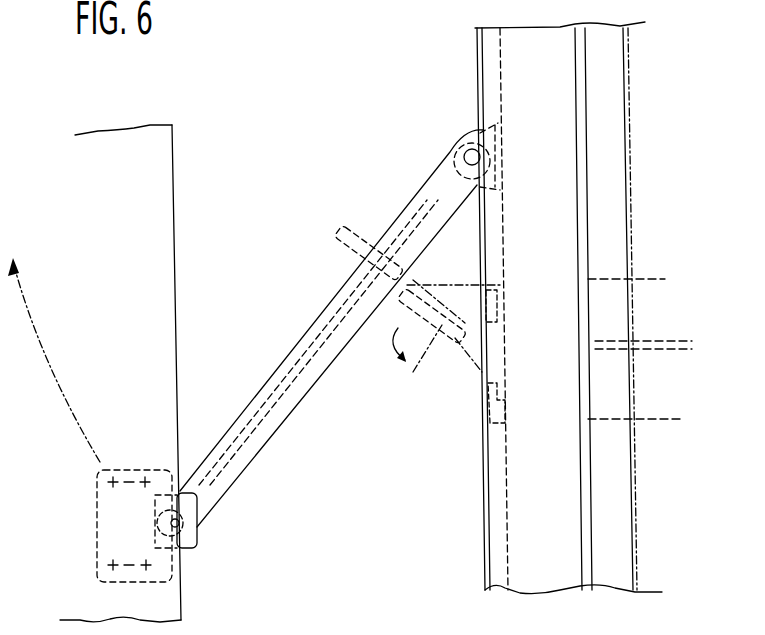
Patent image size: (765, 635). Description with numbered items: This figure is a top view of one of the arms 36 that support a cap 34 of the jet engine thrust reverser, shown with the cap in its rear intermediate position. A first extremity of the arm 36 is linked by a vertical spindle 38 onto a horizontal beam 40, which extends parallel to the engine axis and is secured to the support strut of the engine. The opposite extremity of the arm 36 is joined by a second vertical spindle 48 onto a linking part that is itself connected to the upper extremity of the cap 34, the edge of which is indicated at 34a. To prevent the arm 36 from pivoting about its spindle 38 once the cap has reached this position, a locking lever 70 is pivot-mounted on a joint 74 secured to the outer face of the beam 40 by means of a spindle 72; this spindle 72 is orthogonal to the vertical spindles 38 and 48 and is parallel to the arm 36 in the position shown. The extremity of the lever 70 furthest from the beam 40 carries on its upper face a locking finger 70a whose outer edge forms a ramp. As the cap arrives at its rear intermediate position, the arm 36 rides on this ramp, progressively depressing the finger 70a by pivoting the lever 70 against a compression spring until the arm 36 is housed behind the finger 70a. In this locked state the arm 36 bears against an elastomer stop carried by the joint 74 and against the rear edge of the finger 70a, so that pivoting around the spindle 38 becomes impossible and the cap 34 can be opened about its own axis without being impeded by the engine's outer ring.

The cap 34 is at (137, 135).
The door panel edge 34a is at (223, 157).
The arm 36 is at (292, 354).
The vertical spindle 38 is at (463, 148).
The horizontal beam 40 is at (487, 53).
The spindle 48 is at (198, 530).
The locking lever 70 is at (440, 286).
The locking finger 70a is at (322, 308).
The spindle 72 is at (452, 342).
The joint 74 is at (463, 376).